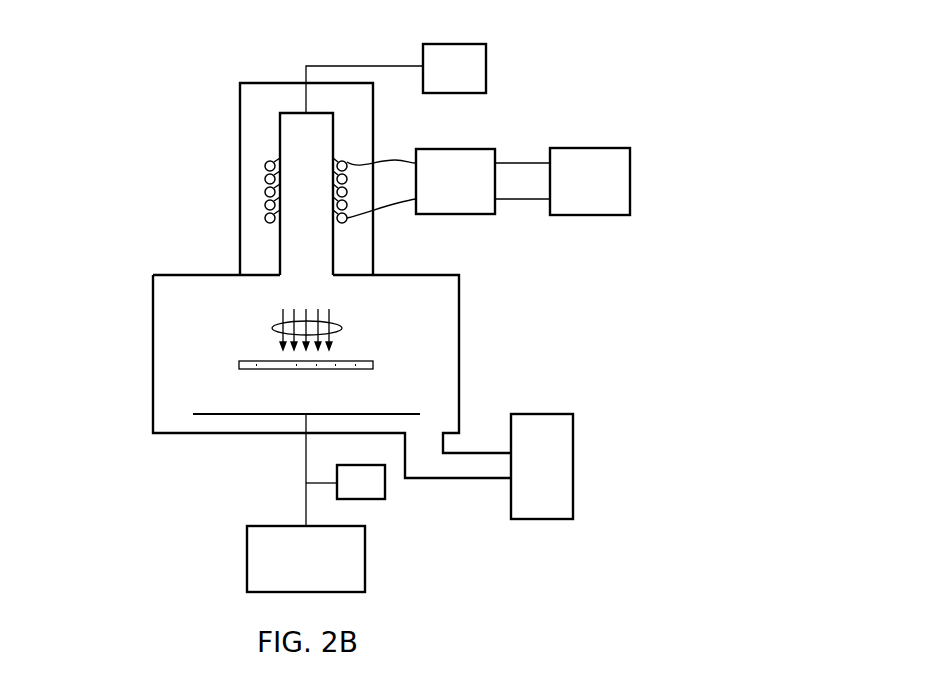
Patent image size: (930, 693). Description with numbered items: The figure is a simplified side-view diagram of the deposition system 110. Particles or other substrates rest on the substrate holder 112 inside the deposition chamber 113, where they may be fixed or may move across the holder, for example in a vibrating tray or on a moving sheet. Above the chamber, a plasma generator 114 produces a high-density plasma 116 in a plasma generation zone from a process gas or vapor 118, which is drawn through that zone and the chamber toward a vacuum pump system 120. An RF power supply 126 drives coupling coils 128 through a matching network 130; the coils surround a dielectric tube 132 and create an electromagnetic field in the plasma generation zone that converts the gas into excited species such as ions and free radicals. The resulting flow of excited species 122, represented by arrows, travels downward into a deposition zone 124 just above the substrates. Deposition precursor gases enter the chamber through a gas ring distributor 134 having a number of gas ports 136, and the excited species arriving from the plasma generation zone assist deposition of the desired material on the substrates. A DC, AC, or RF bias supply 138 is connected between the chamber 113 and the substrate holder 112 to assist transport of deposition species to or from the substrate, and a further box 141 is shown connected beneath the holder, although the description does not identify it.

The plasma processing system 110 is at (140, 100).
The substrate support pedestal 112 is at (393, 414).
The processing chamber 113 is at (459, 335).
The plasma source 114 is at (395, 234).
The plasma tube 116 is at (322, 195).
The gas supply 118 is at (490, 65).
The vacuum pump 120 is at (573, 467).
The plasma 122 is at (342, 328).
The chamber interior 124 is at (323, 402).
The RF power source 126 is at (630, 183).
The induction coil 128 is at (258, 232).
The matching network 130 is at (453, 149).
The shield housing 132 is at (278, 147).
The substrate 134 is at (362, 361).
The substrate layer 136 is at (277, 369).
The controller 138 is at (377, 499).
The bias power source 141 is at (247, 558).